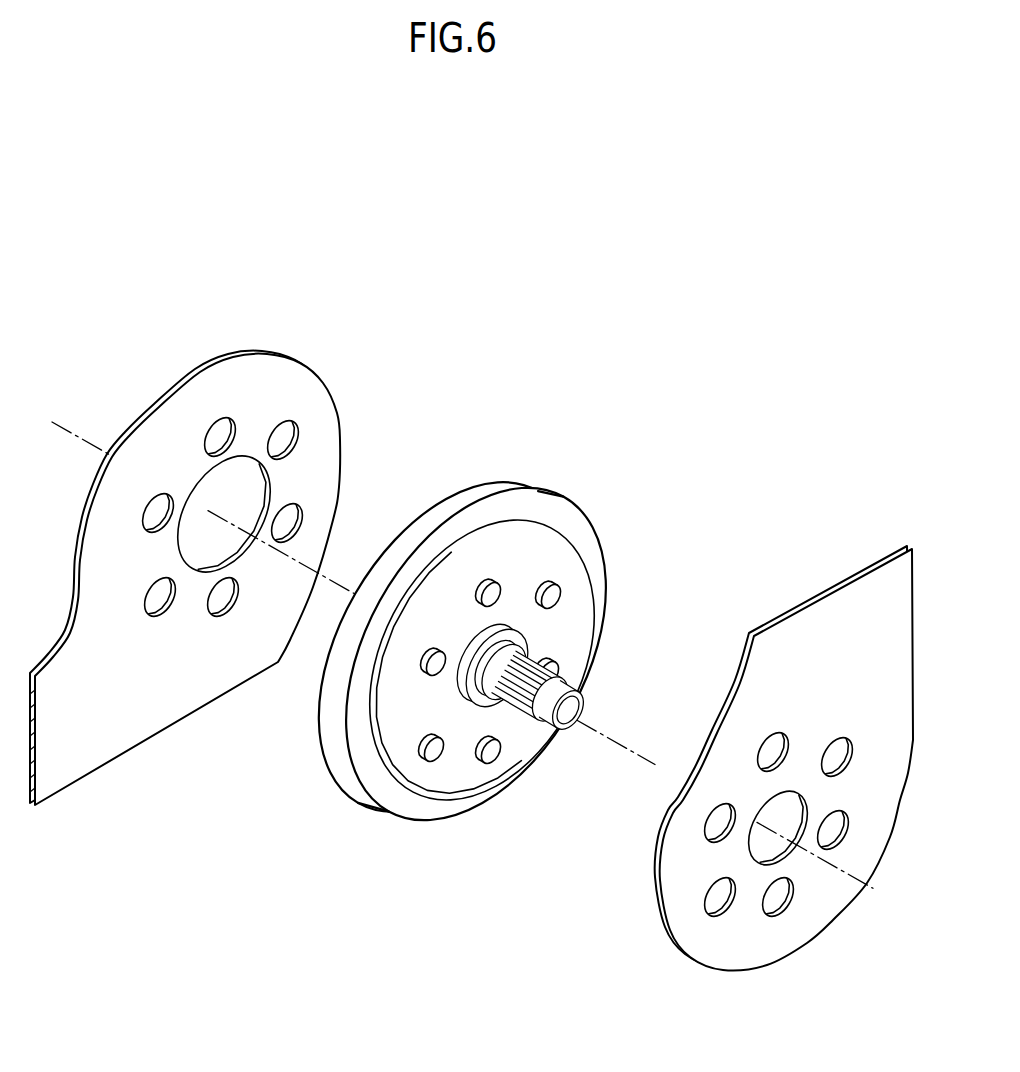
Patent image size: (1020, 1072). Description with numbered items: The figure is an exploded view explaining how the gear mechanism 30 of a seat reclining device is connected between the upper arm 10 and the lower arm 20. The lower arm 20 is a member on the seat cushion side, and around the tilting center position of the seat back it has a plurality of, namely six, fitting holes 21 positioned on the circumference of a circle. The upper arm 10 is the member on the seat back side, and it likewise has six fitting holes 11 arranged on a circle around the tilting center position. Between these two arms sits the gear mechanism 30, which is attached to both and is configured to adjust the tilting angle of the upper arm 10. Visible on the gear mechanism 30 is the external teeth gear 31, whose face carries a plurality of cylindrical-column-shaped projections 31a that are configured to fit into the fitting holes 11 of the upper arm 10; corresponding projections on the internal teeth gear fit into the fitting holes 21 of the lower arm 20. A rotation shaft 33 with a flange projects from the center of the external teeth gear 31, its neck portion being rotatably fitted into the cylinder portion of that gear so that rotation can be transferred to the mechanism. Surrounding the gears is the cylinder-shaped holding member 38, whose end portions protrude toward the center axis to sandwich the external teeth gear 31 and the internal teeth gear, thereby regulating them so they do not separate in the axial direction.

The upper arm 10 is at (737, 986).
The fitting holes 11 is at (788, 908).
The lower arm 20 is at (334, 350).
The fitting holes 21 is at (291, 452).
The gear mechanism 30 is at (465, 665).
The external teeth gear 31 is at (543, 547).
The projections 31a is at (556, 597).
The rotation shaft 33 is at (517, 657).
The holding member 38 is at (542, 505).